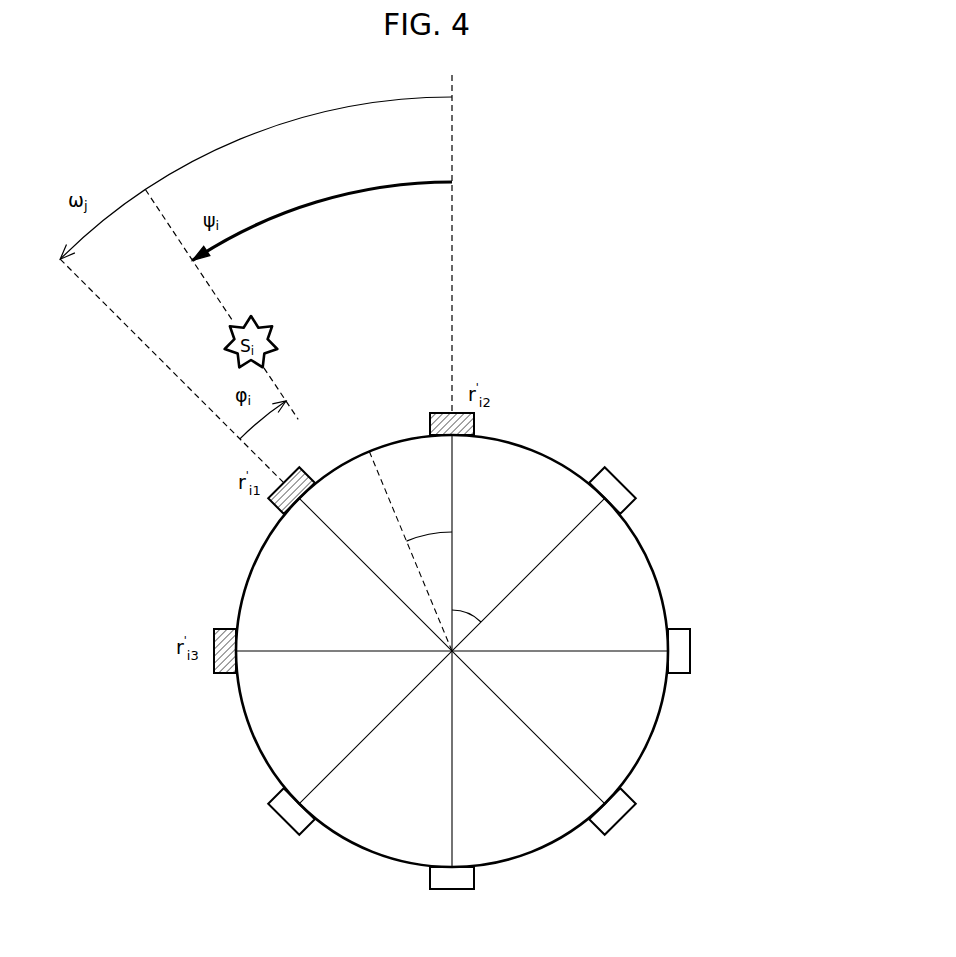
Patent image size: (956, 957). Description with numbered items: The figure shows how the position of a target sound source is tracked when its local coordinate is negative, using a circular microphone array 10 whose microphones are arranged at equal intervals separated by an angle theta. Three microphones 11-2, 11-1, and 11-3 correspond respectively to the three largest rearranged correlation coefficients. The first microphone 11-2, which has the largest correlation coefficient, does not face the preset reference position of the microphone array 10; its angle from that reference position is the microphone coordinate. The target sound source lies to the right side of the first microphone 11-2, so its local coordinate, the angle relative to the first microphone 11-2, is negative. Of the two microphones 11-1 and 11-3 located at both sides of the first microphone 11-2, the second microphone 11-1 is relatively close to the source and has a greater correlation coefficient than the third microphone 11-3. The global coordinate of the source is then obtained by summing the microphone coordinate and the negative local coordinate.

The microphone array 10 is at (722, 615).
The second microphone 11-1 is at (468, 424).
The first microphone 11-2 is at (277, 508).
The third microphone 11-3 is at (223, 674).